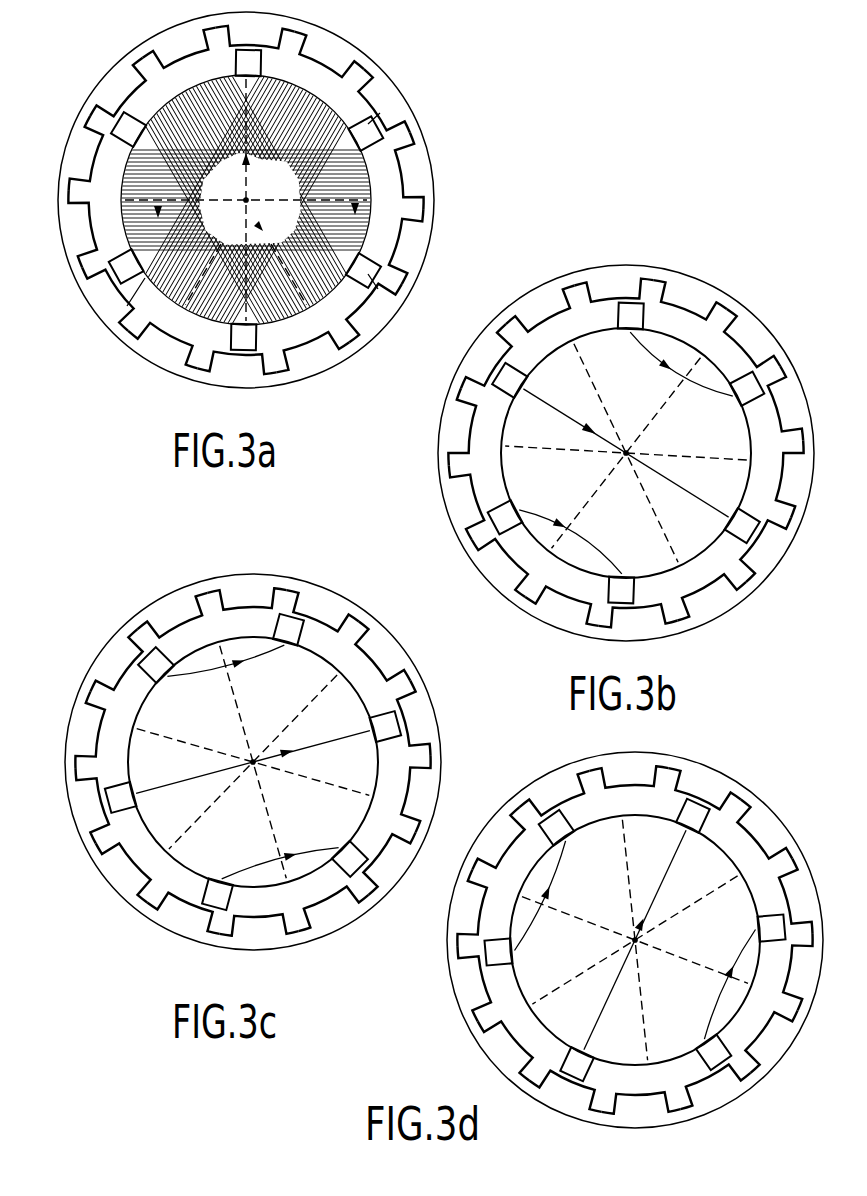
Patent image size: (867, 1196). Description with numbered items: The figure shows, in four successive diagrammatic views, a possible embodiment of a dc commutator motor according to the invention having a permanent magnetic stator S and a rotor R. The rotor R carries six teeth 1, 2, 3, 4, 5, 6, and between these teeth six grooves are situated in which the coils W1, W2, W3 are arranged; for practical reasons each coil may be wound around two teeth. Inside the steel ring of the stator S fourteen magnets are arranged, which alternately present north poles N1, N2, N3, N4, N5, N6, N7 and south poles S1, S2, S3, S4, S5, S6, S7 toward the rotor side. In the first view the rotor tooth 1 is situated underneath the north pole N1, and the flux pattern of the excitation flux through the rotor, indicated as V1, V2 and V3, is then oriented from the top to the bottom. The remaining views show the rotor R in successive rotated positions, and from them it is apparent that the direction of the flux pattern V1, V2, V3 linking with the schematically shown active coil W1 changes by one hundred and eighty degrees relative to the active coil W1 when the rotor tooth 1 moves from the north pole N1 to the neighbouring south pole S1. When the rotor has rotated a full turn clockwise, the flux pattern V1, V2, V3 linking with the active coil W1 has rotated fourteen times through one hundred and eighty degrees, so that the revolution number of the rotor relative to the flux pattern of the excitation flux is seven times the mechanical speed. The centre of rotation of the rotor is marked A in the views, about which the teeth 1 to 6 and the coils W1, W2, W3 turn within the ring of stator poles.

In FIG. 3a, the stator S is at (246, 196).
In FIG. 3b, the stator S is at (626, 434).
In FIG. 3c, the stator S is at (253, 743).
In FIG. 3d, the stator S is at (635, 929).
In FIG. 3a, the rotor R is at (246, 247).
In FIG. 3b, the rotor R is at (626, 490).
In FIG. 3c, the rotor R is at (250, 794).
In FIG. 3d, the rotor R is at (635, 981).
In FIG. 3a, the north pole N1 is at (255, 32).
In FIG. 3b, the north pole N1 is at (615, 297).
In FIG. 3c, the north pole N1 is at (247, 594).
In FIG. 3d, the north pole N1 is at (629, 772).
In FIG. 3a, the north pole N2 is at (380, 105).
In FIG. 3b, the north pole N2 is at (748, 342).
In FIG. 3c, the north pole N2 is at (379, 655).
In FIG. 3d, the north pole N2 is at (761, 833).
In FIG. 3a, the north pole N3 is at (405, 244).
In FIG. 3b, the north pole N3 is at (790, 478).
In FIG. 3c, the north pole N3 is at (416, 793).
In FIG. 3d, the north pole N3 is at (798, 971).
In FIG. 3a, the north pole N4 is at (310, 351).
In FIG. 3b, the north pole N4 is at (707, 594).
In FIG. 3c, the north pole N4 is at (330, 906).
In FIG. 3d, the north pole N4 is at (712, 1084).
In FIG. 3a, the north pole N5 is at (166, 343).
In FIG. 3b, the north pole N5 is at (564, 604).
In FIG. 3c, the north pole N5 is at (187, 911).
In FIG. 3d, the north pole N5 is at (569, 1089).
In FIG. 3a, the north pole N6 is at (82, 228).
In FIG. 3b, the north pole N6 is at (469, 500).
In FIG. 3c, the north pole N6 is at (92, 804).
In FIG. 3d, the north pole N6 is at (485, 981).
In FIG. 3a, the north pole N7 is at (122, 92).
In FIG. 3b, the north pole N7 is at (490, 360).
In FIG. 3c, the north pole N7 is at (120, 664).
In FIG. 3d, the north pole N7 is at (502, 842).
In FIG. 3a, the south pole S1 is at (325, 57).
In FIG. 3b, the south pole S1 is at (687, 301).
In FIG. 3c, the south pole S1 is at (320, 613).
In FIG. 3d, the south pole S1 is at (702, 791).
In FIG. 3a, the south pole S2 is at (409, 172).
In FIG. 3b, the south pole S2 is at (776, 406).
In FIG. 3c, the south pole S2 is at (413, 720).
In FIG. 3d, the south pole S2 is at (792, 898).
In FIG. 3a, the south pole S3 is at (369, 308).
In FIG. 3b, the south pole S3 is at (762, 545).
In FIG. 3c, the south pole S3 is at (386, 858).
In FIG. 3d, the south pole S3 is at (768, 1036).
In FIG. 3a, the south pole S4 is at (237, 370).
In FIG. 3b, the south pole S4 is at (637, 622).
In FIG. 3c, the south pole S4 is at (259, 932).
In FIG. 3d, the south pole S4 is at (641, 1110).
In FIG. 3a, the south pole S5 is at (111, 295).
In FIG. 3b, the south pole S5 is at (504, 563).
In FIG. 3c, the south pole S5 is at (128, 867).
In FIG. 3d, the south pole S5 is at (510, 1045).
In FIG. 3a, the south pole S6 is at (87, 155).
In FIG. 3b, the south pole S6 is at (462, 428).
In FIG. 3c, the south pole S6 is at (90, 732).
In FIG. 3d, the south pole S6 is at (472, 910).
In FIG. 3a, the south pole S7 is at (182, 50).
In FIG. 3b, the south pole S7 is at (543, 311).
In FIG. 3c, the south pole S7 is at (176, 618).
In FIG. 3d, the south pole S7 is at (558, 798).
In FIG. 3a, the rotor tooth 1 is at (248, 63).
In FIG. 3b, the rotor tooth 1 is at (631, 316).
In FIG. 3c, the rotor tooth 1 is at (288, 630).
In FIG. 3d, the rotor tooth 1 is at (693, 816).
In FIG. 3a, the rotor tooth 2 is at (128, 129).
In FIG. 3b, the rotor tooth 2 is at (509, 380).
In FIG. 3c, the rotor tooth 2 is at (156, 665).
In FIG. 3d, the rotor tooth 2 is at (556, 828).
In FIG. 3a, the rotor tooth 3 is at (126, 266).
In FIG. 3b, the rotor tooth 3 is at (505, 517).
In FIG. 3c, the rotor tooth 3 is at (121, 797).
In FIG. 3d, the rotor tooth 3 is at (498, 951).
In FIG. 3a, the rotor tooth 4 is at (243, 335).
In FIG. 3b, the rotor tooth 4 is at (621, 589).
In FIG. 3c, the rotor tooth 4 is at (217, 895).
In FIG. 3d, the rotor tooth 4 is at (577, 1064).
In FIG. 3a, the rotor tooth 5 is at (363, 270).
In FIG. 3b, the rotor tooth 5 is at (742, 525).
In FIG. 3c, the rotor tooth 5 is at (350, 859).
In FIG. 3d, the rotor tooth 5 is at (713, 1052).
In FIG. 3a, the rotor tooth 6 is at (365, 133).
In FIG. 3b, the rotor tooth 6 is at (747, 389).
In FIG. 3c, the rotor tooth 6 is at (386, 726).
In FIG. 3d, the rotor tooth 6 is at (771, 927).
In FIG. 3a, the flux pattern of the excitation flux V1 is at (246, 185).
In FIG. 3b, the flux pattern of the excitation flux V1 is at (570, 520).
In FIG. 3c, the flux pattern of the excitation flux V1 is at (280, 838).
In FIG. 3d, the flux pattern of the excitation flux V1 is at (704, 985).
In FIG. 3a, the flux pattern of the excitation flux V2 is at (262, 200).
In FIG. 3b, the flux pattern of the excitation flux V2 is at (622, 453).
In FIG. 3c, the flux pattern of the excitation flux V2 is at (253, 754).
In FIG. 3d, the flux pattern of the excitation flux V2 is at (635, 939).
In FIG. 3a, the flux pattern of the excitation flux V3 is at (338, 186).
In FIG. 3b, the flux pattern of the excitation flux V3 is at (677, 364).
In FIG. 3c, the flux pattern of the excitation flux V3 is at (225, 674).
In FIG. 3d, the flux pattern of the excitation flux V3 is at (540, 900).
In FIG. 3a, the active coil W1 is at (280, 256).
In FIG. 3b, the active coil W1 is at (626, 467).
In FIG. 3c, the active coil W1 is at (253, 776).
In FIG. 3d, the active coil W1 is at (635, 937).
In FIG. 3a, the coil W2 is at (213, 254).
In FIG. 3b, the coil W2 is at (626, 453).
In FIG. 3c, the coil W2 is at (253, 762).
In FIG. 3d, the coil W2 is at (638, 940).
In FIG. 3a, the coil W3 is at (223, 184).
In FIG. 3b, the coil W3 is at (626, 453).
In FIG. 3c, the coil W3 is at (253, 762).
In FIG. 3d, the coil W3 is at (634, 940).
In FIG. 3a, the rotor axis A is at (260, 187).
In FIG. 3b, the rotor axis A is at (604, 465).
In FIG. 3c, the rotor axis A is at (236, 743).
In FIG. 3d, the rotor axis A is at (655, 938).